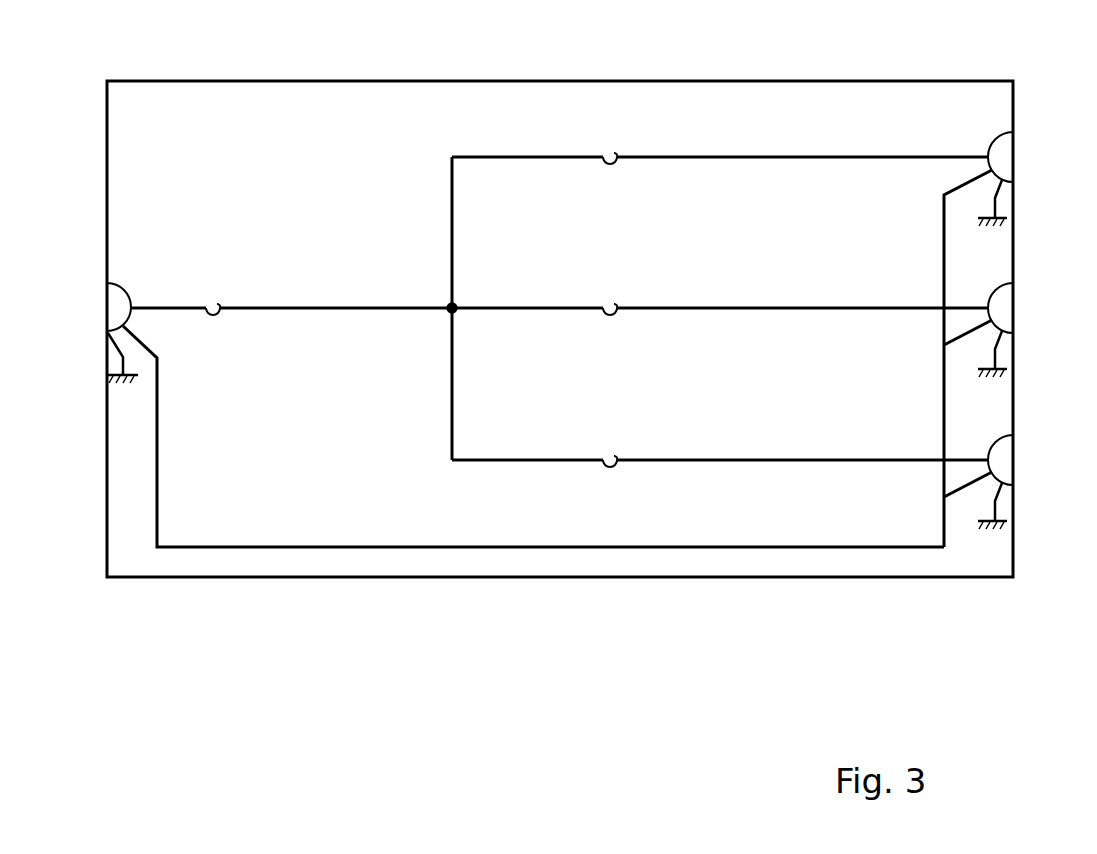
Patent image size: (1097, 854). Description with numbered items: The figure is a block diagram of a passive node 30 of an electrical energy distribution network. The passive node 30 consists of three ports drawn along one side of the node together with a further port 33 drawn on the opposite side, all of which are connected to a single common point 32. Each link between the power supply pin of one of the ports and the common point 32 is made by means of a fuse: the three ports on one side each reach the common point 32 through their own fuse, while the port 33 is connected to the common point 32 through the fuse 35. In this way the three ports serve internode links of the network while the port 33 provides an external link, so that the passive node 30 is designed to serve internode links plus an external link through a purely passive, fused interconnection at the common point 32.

The passive node 30 is at (783, 81).
The common point 32 is at (453, 308).
The port 33 is at (118, 305).
The fuse 35 is at (228, 303).